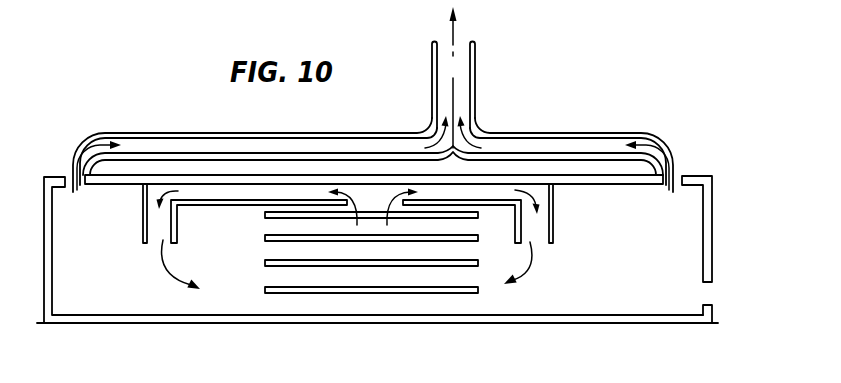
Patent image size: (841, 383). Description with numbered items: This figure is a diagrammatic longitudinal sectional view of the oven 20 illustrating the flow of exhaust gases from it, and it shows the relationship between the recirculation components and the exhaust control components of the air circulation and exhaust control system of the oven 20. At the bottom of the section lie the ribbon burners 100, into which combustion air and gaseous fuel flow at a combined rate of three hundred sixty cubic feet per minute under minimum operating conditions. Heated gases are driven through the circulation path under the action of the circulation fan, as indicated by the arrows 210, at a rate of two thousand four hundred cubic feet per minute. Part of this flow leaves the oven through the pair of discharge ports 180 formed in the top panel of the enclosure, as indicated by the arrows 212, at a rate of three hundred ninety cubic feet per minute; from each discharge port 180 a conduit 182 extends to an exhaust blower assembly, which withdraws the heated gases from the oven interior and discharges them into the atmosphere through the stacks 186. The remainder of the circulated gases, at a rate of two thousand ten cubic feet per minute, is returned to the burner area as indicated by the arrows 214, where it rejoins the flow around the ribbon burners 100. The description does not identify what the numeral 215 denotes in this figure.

The oven 20 is at (204, 118).
The ribbon burners 100 is at (422, 218).
The discharge ports 180 is at (63, 176).
The conduits 182 is at (268, 132).
The stacks 186 is at (478, 62).
The arrows 210 is at (388, 189).
The arrows 212 is at (92, 143).
The arrows 214 is at (181, 272).
The vent opening 215 is at (716, 295).